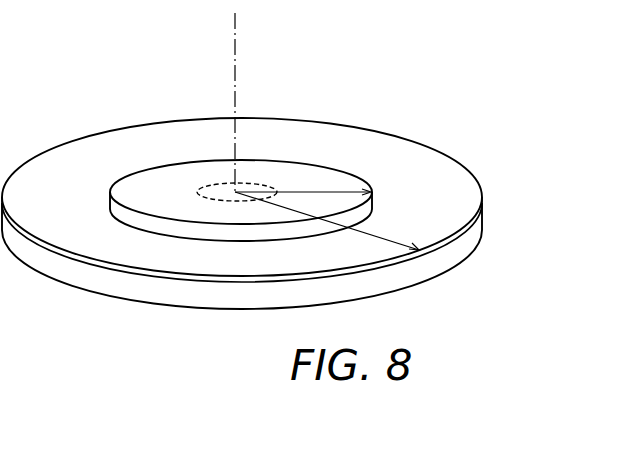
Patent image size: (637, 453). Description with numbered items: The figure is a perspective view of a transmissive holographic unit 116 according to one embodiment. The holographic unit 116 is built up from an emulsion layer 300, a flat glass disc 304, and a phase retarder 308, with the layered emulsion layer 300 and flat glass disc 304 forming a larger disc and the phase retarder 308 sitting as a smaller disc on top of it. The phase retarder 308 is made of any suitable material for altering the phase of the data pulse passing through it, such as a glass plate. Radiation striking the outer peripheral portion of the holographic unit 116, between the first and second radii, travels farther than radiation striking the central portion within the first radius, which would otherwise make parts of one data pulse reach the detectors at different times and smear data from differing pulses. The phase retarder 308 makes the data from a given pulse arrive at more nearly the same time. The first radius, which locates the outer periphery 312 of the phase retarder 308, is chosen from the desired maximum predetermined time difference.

The transmissive holographic unit 116 is at (242, 196).
The emulsion layer 300 is at (125, 276).
The flat glass disc 304 is at (182, 299).
The phase retarder 308 is at (333, 169).
The outer periphery of the phase retarder 312 is at (372, 195).